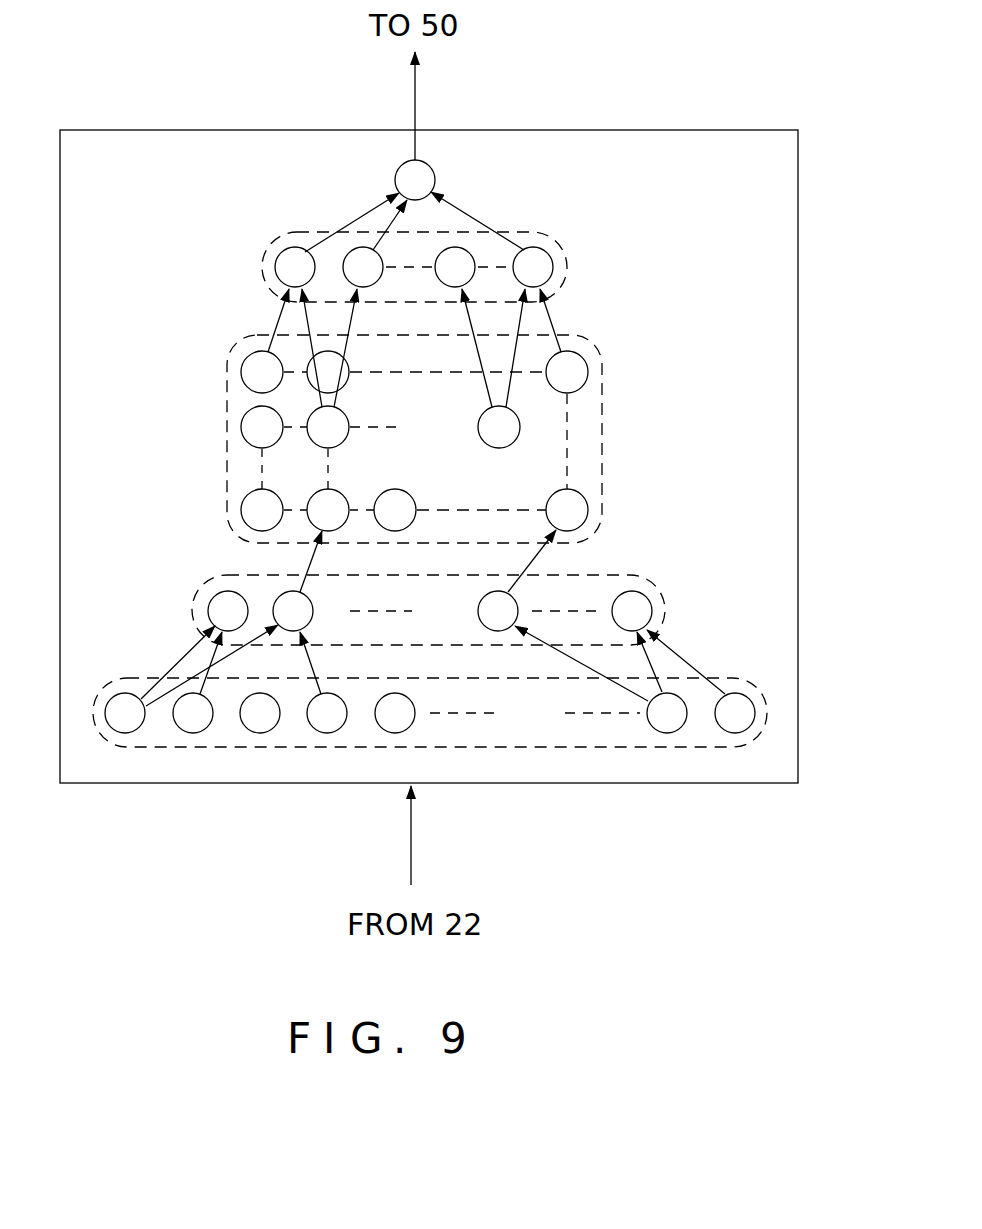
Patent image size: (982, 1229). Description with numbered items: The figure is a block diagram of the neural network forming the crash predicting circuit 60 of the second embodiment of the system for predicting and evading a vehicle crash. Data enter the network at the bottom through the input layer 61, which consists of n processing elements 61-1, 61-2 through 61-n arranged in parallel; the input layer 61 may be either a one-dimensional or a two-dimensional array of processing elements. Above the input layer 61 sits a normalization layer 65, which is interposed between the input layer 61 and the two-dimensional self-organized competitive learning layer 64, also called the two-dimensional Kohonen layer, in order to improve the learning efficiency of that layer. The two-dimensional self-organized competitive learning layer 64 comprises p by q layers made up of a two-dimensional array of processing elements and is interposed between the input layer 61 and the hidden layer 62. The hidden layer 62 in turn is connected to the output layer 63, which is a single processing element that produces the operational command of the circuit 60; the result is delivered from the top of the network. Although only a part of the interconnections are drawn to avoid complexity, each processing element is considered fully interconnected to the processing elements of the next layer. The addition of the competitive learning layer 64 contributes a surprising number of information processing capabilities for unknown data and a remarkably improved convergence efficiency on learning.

The crash predicting circuit 60 is at (798, 392).
The input layer 61 is at (768, 712).
The processing element 61-1 is at (125, 735).
The processing element 61-2 is at (193, 735).
The processing element 61-n is at (730, 735).
The hidden layer 62 is at (567, 264).
The output layer 63 is at (437, 178).
The two-dimensional self-organized competitive learning layer 64 is at (602, 425).
The normalization layer 65 is at (655, 578).